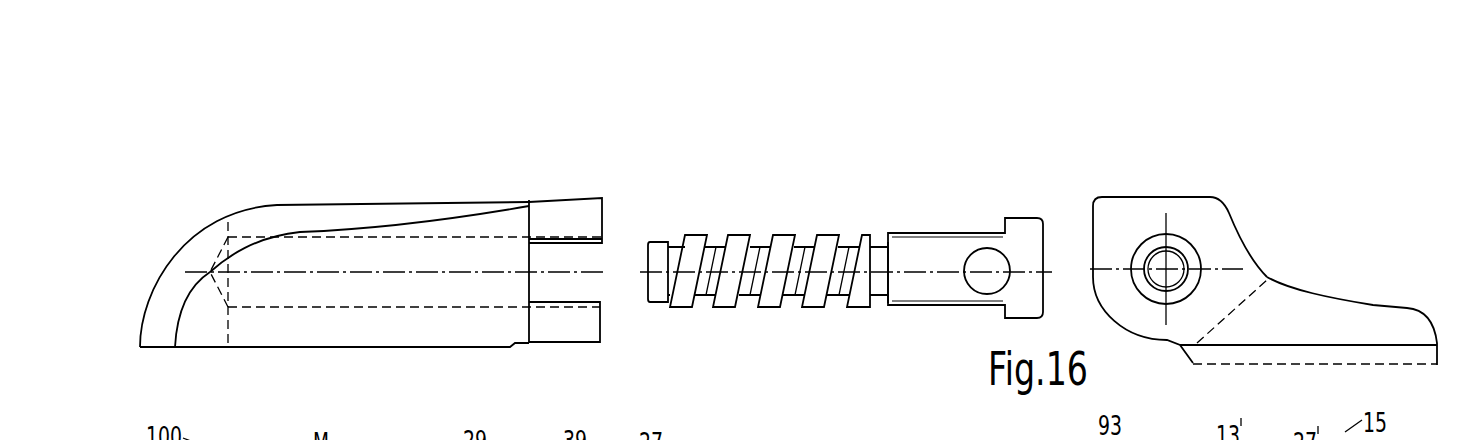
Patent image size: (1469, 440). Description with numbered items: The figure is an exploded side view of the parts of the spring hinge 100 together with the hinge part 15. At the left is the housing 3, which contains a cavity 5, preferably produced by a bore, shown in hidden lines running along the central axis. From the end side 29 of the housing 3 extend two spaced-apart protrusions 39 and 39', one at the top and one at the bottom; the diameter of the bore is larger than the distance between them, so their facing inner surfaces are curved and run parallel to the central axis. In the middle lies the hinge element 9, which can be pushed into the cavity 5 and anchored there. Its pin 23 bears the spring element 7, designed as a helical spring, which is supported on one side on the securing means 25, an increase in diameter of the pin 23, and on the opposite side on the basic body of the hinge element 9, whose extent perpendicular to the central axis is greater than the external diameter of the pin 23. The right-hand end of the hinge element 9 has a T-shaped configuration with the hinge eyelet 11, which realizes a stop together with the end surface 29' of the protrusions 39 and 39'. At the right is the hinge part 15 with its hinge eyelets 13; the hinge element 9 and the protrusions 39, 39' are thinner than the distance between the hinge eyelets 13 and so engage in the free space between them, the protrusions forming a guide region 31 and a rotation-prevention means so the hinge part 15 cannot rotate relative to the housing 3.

The housing 3 is at (203, 245).
The spring hinge 100 is at (290, 194).
The cavity 5 is at (423, 249).
The protrusion 39 is at (363, 204).
The end surface 29' is at (599, 146).
The end side 29 is at (640, 215).
The protrusion 39' is at (564, 372).
The securing means 25 is at (660, 293).
The pin 23 is at (748, 277).
The spring element 7 is at (740, 229).
The hinge element 9 is at (895, 307).
The hinge eyelet 11 is at (988, 263).
The guide region 31 is at (1103, 196).
The hinge eyelets 13 is at (1233, 263).
The hinge part 15 is at (1353, 313).